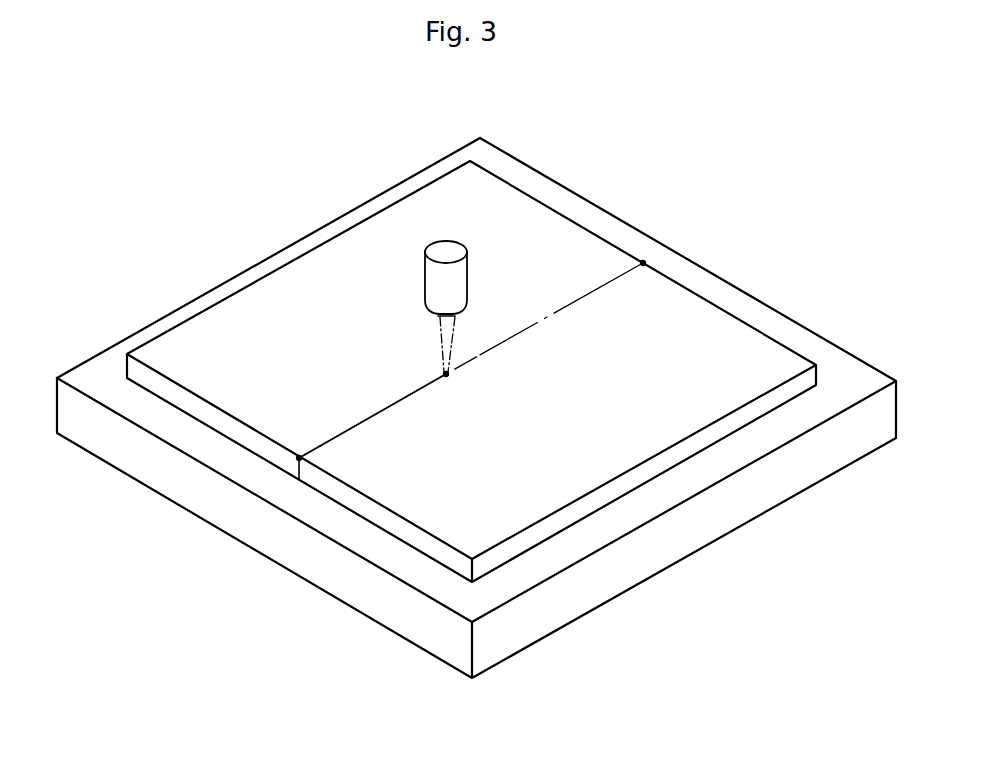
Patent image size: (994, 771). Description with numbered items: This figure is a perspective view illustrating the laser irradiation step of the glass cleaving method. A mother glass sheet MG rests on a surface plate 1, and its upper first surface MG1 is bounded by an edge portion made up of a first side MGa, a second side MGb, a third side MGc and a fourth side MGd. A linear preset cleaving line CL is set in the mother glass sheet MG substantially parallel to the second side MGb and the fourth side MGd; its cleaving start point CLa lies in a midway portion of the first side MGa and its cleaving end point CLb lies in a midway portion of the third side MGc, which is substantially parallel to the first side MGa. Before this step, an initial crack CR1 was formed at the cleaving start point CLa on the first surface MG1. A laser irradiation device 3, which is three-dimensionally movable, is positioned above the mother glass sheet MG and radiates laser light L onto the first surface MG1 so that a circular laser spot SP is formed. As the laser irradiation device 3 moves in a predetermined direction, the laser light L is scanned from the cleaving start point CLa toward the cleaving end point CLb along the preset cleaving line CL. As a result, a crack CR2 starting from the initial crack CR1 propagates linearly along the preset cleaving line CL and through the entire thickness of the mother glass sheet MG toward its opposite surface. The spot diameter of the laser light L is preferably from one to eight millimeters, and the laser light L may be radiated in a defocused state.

The surface plate 1 is at (735, 500).
The laser irradiation device 3 is at (447, 250).
The mother glass sheet MG is at (476, 397).
The first side MGa is at (232, 419).
The second side MGb is at (575, 503).
The third side MGc is at (515, 185).
The fourth side MGd is at (198, 313).
The first surface MG1 is at (300, 290).
The laser light L is at (453, 343).
The preset cleaving line CL is at (562, 310).
The cleaving start point CLa is at (287, 445).
The cleaving end point CLb is at (643, 263).
The initial crack CR1 is at (287, 445).
The crack CR2 is at (360, 420).
The laser spot SP is at (446, 374).